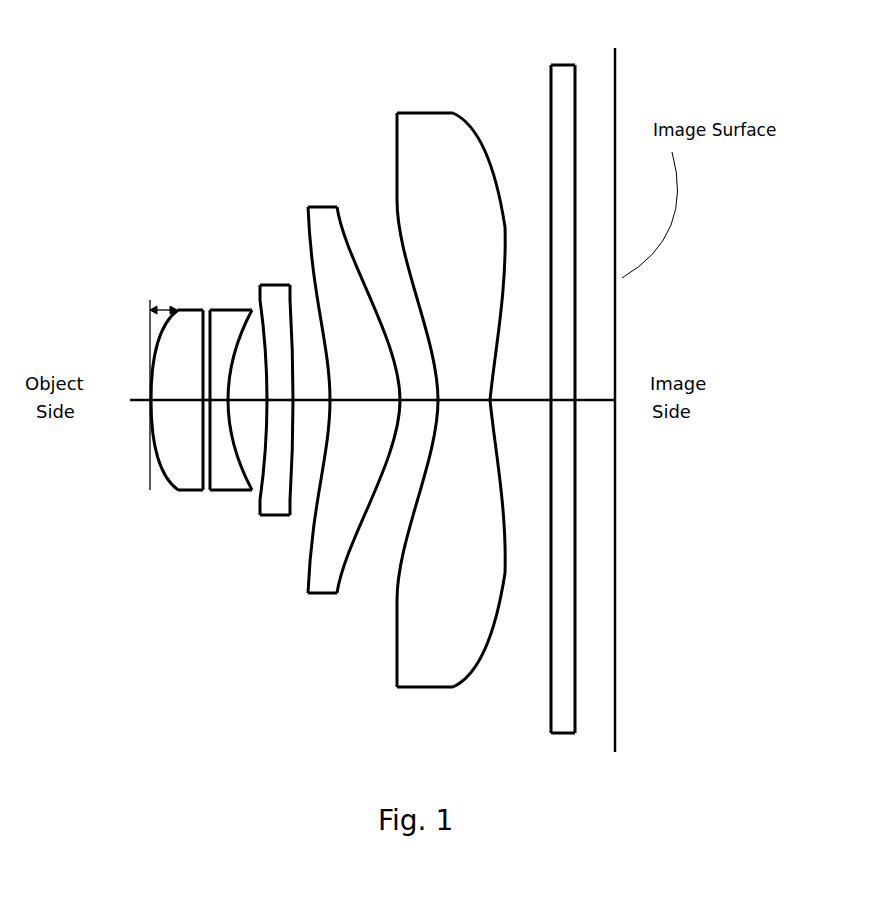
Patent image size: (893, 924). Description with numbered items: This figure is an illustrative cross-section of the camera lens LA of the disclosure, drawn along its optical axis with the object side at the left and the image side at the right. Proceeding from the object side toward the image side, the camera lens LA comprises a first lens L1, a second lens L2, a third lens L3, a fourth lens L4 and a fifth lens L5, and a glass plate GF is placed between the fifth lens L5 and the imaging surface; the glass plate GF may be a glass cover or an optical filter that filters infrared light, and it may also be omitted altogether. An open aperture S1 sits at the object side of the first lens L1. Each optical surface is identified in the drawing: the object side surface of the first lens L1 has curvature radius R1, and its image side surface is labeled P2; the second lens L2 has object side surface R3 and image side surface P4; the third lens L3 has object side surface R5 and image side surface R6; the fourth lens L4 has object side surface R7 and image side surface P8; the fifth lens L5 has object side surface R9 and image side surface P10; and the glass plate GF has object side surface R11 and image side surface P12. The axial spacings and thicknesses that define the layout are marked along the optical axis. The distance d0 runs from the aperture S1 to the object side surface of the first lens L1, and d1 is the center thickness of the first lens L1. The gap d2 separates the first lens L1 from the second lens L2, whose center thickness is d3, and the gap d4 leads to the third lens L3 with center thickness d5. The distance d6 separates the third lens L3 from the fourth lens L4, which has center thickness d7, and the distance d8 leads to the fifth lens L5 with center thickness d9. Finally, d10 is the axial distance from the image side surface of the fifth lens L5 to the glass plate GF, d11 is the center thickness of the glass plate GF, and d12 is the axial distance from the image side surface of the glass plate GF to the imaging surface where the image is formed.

The camera lens LA is at (186, 171).
The aperture S1 is at (172, 302).
The first lens L1 is at (152, 434).
The second lens L2 is at (214, 423).
The third lens L3 is at (263, 435).
The fourth lens L4 is at (341, 418).
The fifth lens L5 is at (425, 416).
The glass plate GF is at (562, 183).
The curvature radius of the first lens's object side surface R1 is at (150, 413).
The image side surface of first lens P2 is at (203, 410).
The curvature radius of the second lens's object side surface R3 is at (209, 412).
The image side surface of second lens P4 is at (235, 430).
The curvature radius of the third lens's object side surface R5 is at (264, 420).
The curvature radius of the third lens's image side surface R6 is at (291, 420).
The curvature radius of the fourth lens's object side surface R7 is at (325, 458).
The image side surface of fourth lens P8 is at (392, 445).
The curvature radius of the fifth lens's object side surface R9 is at (427, 485).
The image side surface of fifth lens P10 is at (493, 470).
The curvature radius of the glass plate's object side surface R11 is at (551, 600).
The image side surface of glass filter P12 is at (575, 600).
The axial distance from the aperture to the first lens d0 is at (150, 305).
The center thickness of the first lens d1 is at (177, 389).
The axial distance from the first lens to the second lens d2 is at (205, 378).
The center thickness of the second lens d3 is at (219, 389).
The axial distance from the second lens to the third lens d4 is at (247, 389).
The center thickness of the third lens d5 is at (280, 389).
The axial distance from the third lens to the fourth lens d6 is at (311, 389).
The center thickness of the fourth lens d7 is at (365, 389).
The axial distance from the fourth lens to the fifth lens d8 is at (419, 389).
The center thickness of the fifth lens d9 is at (464, 389).
The axial distance from the fifth lens to the glass plate d10 is at (520, 389).
The center thickness of the glass plate d11 is at (562, 397).
The axial distance from the glass plate to the imaging surface d12 is at (595, 389).